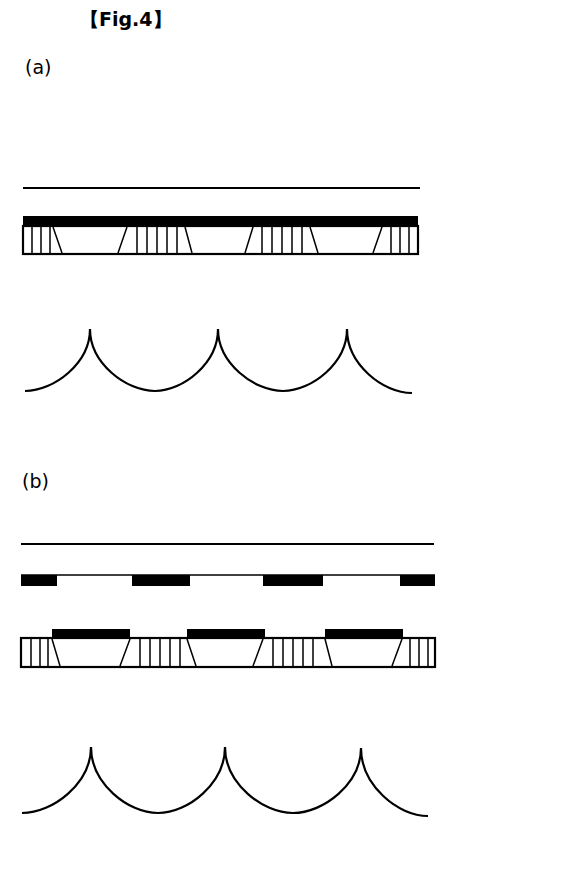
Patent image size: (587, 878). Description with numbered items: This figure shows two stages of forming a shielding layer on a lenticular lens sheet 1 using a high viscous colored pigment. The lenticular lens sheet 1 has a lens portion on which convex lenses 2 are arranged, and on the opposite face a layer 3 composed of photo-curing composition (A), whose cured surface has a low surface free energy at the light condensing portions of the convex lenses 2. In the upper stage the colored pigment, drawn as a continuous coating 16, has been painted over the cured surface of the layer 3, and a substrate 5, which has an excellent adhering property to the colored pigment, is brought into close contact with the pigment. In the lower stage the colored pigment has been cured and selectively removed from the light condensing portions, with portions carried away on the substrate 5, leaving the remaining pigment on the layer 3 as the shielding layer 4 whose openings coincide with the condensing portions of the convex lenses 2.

The lenticular lens sheet 1 is at (253, 579).
The convex lenses 2 is at (391, 376).
The layer of photo-curing composition (A) 3 is at (430, 247).
The shielding layer 4 is at (419, 632).
The substrate 5 is at (368, 189).
The reflective layer 16 is at (431, 222).